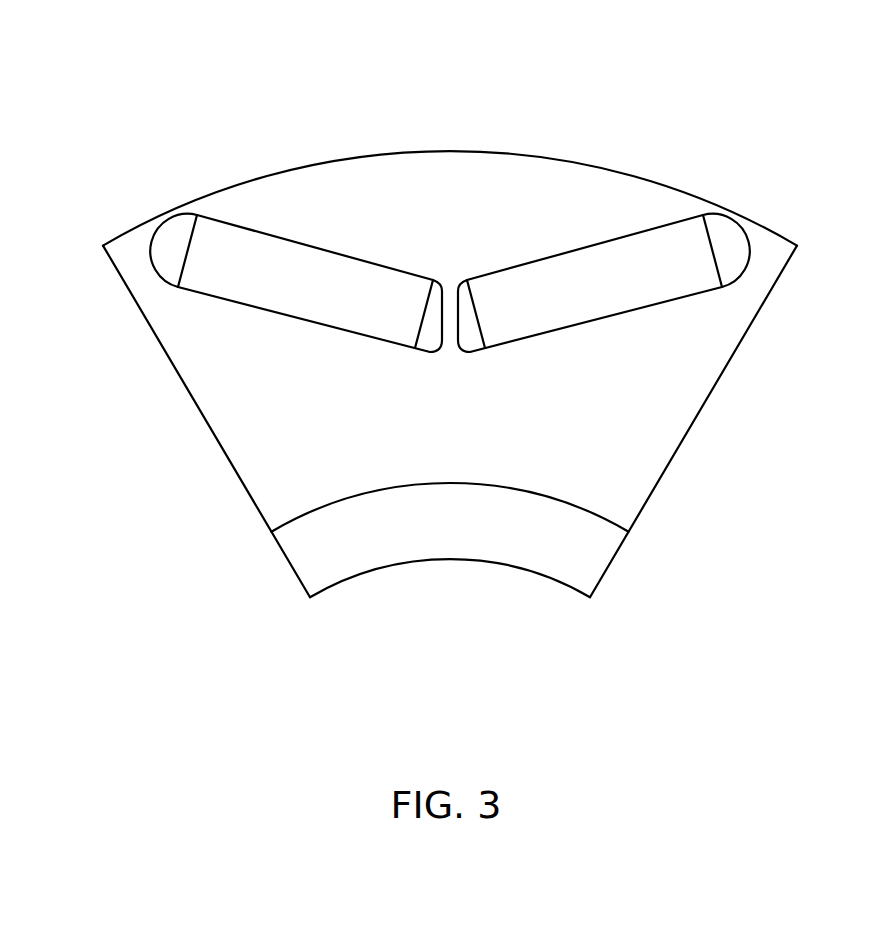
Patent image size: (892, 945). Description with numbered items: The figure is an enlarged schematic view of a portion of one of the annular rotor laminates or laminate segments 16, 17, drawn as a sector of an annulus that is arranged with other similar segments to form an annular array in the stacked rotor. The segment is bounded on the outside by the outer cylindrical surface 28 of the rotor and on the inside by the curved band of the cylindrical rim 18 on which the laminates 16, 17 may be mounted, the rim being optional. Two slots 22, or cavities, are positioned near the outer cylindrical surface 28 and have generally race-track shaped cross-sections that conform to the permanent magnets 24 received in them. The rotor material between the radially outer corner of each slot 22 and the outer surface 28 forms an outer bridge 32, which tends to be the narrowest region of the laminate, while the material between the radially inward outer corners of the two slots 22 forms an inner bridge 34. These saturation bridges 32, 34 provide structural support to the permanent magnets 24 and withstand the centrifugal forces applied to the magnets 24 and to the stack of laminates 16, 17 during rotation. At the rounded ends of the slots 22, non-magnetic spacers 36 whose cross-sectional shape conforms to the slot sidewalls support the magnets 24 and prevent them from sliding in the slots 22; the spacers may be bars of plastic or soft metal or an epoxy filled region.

The laminate 16 is at (450, 359).
The laminate segment 17 is at (450, 359).
The cylindrical rim 18 is at (355, 538).
The slot 22 is at (450, 328).
The permanent magnet 24 is at (425, 225).
The outer cylindrical surface 28 is at (322, 162).
The outer bridge 32 is at (168, 212).
The inner bridge 34 is at (453, 280).
The non-magnetic spacer 36 is at (173, 252).